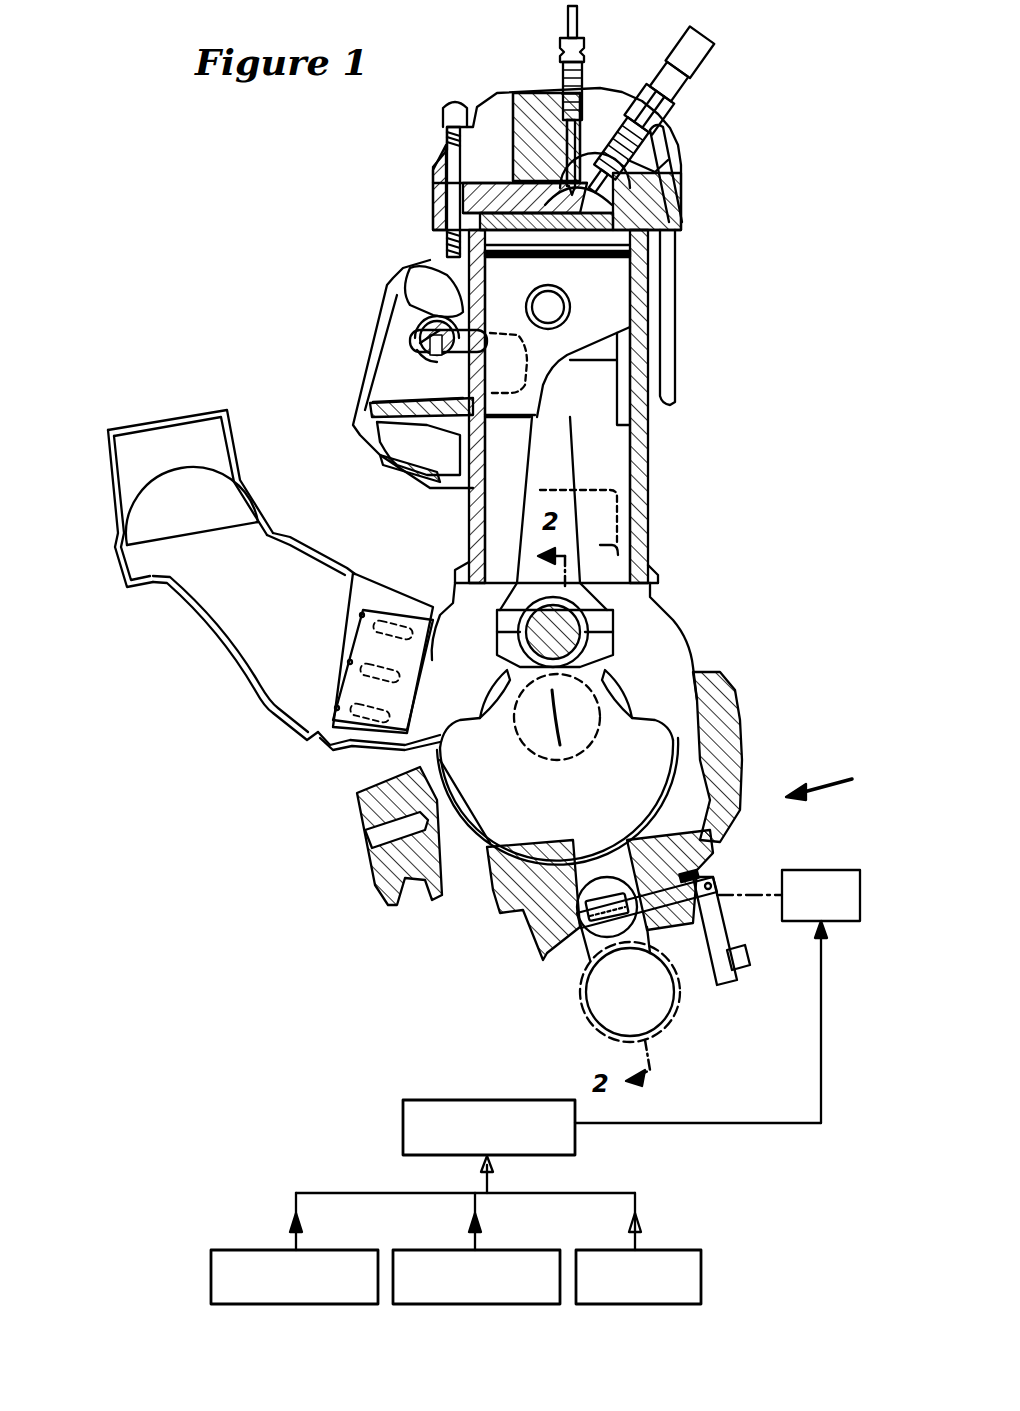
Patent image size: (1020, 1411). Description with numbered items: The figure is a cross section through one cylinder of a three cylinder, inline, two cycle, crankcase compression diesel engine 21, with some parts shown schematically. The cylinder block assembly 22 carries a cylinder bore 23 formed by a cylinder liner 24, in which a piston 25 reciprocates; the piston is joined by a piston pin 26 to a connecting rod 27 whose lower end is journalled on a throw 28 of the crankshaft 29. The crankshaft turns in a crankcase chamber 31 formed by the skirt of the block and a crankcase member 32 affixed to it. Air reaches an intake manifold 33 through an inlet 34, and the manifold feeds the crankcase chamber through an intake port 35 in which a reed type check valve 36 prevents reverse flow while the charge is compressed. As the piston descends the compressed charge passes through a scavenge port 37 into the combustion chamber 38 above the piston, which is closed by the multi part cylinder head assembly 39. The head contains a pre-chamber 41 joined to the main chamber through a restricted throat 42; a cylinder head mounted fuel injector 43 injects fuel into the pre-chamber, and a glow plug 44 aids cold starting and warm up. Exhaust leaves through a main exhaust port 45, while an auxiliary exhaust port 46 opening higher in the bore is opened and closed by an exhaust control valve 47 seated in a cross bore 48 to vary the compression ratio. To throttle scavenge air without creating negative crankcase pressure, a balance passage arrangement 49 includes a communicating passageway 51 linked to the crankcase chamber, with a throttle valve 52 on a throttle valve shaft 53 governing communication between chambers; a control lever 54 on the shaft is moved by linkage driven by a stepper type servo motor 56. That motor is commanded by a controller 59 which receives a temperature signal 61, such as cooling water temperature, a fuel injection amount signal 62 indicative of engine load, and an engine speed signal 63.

The engine 21 is at (736, 95).
The cylinder block assembly 22 is at (650, 450).
The cylinder bore 23 is at (485, 467).
The cylinder liner 24 is at (633, 477).
The piston 25 is at (522, 408).
The piston pin 26 is at (597, 287).
The connecting rod 27 is at (567, 470).
The throw 28 is at (580, 622).
The crankshaft 29 is at (587, 733).
The crankcase chamber 31 is at (677, 647).
The crankcase member 32 is at (737, 733).
The intake manifold 33 is at (207, 593).
The inlet 34 is at (110, 453).
The intake port 35 is at (353, 743).
The reed type check valve 36 is at (333, 712).
The scavenge port 37 is at (608, 550).
The combustion chamber 38 is at (640, 236).
The cylinder head assembly 39 is at (613, 178).
The pre-chamber 41 is at (655, 172).
The restricted throat 42 is at (680, 206).
The fuel injector 43 is at (642, 105).
The glow plug 44 is at (565, 62).
The main exhaust port 45 is at (360, 420).
The auxiliary exhaust port 46 is at (420, 332).
The exhaust control valve 47 is at (423, 353).
The cross bore 48 is at (420, 343).
The balance passage arrangement 49 is at (580, 1007).
The communicating passageway 51 is at (543, 950).
The throttle valve 52 is at (603, 907).
The throttle valve shaft 53 is at (710, 880).
The control lever 54 is at (727, 927).
The servo motor 56 is at (860, 895).
The controller 59 is at (410, 1104).
The temperature signal 61 is at (221, 1304).
The fuel injection amount signal 62 is at (482, 1304).
The engine speed signal 63 is at (642, 1304).